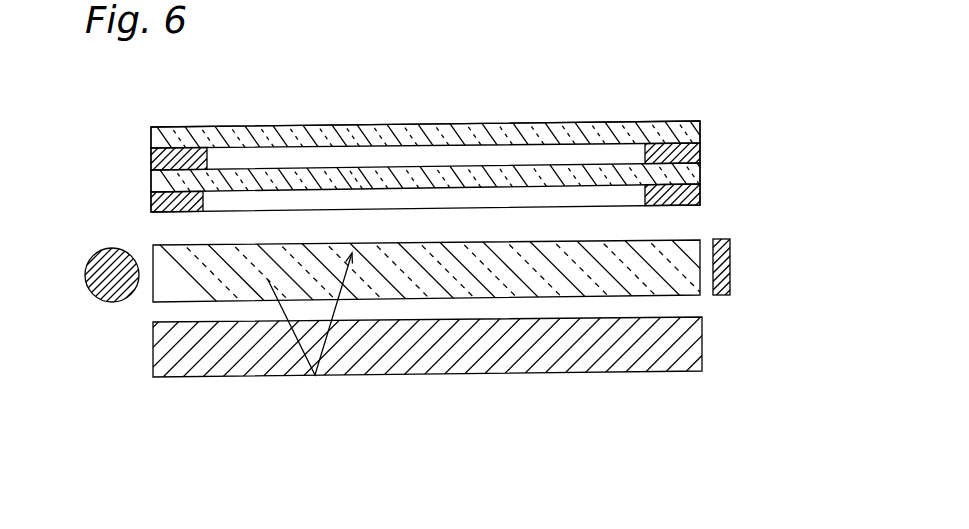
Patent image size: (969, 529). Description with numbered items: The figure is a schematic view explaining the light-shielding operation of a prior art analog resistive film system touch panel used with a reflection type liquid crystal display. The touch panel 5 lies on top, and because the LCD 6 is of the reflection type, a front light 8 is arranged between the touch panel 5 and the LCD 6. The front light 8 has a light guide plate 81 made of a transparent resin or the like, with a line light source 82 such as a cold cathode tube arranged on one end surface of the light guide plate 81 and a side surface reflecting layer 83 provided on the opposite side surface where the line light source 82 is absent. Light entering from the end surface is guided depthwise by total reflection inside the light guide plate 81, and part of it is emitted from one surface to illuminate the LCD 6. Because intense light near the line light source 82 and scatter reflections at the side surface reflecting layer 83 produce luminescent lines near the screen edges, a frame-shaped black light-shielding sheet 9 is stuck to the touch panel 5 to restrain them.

The touch panel 5 is at (682, 127).
The light-shielding sheet 9 is at (700, 193).
The light guide plate 81 is at (602, 280).
The LCD 6 is at (500, 355).
The line light source 82 is at (105, 258).
The side surface reflecting layer 83 is at (730, 275).
The front light 8 is at (732, 264).